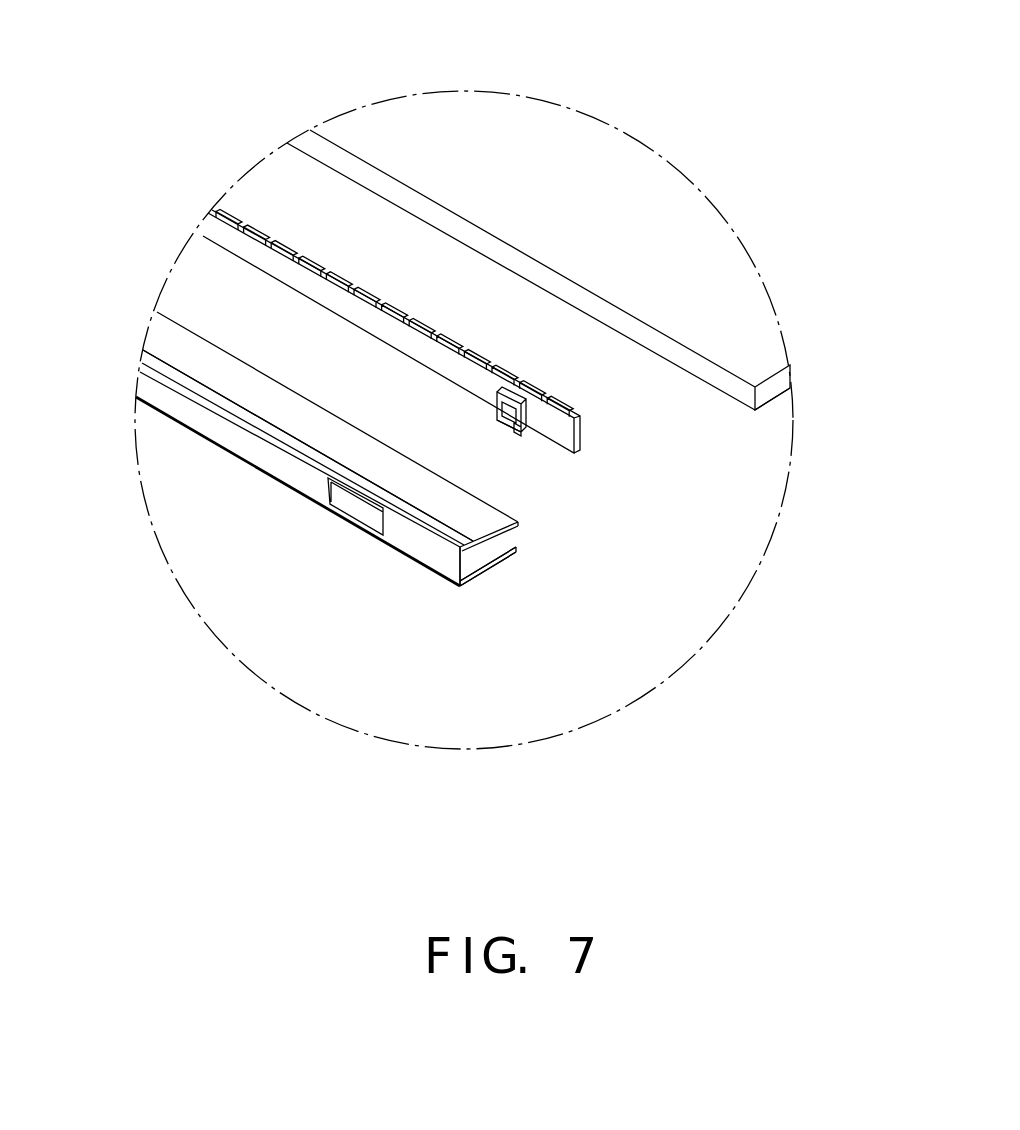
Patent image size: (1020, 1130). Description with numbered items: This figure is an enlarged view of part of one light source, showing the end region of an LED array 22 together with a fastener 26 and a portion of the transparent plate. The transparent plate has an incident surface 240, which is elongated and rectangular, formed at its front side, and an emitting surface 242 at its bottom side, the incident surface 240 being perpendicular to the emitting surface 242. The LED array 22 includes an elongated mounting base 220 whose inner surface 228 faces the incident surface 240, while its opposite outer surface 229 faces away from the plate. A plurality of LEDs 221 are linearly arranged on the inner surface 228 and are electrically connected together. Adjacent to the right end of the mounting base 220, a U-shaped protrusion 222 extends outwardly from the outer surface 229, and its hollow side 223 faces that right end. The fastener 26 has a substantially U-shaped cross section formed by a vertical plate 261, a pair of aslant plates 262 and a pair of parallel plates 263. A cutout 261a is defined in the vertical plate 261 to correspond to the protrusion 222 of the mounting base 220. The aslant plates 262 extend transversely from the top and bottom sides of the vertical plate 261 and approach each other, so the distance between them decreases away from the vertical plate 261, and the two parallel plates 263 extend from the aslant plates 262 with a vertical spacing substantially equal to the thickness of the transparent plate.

The LED array 22 is at (603, 428).
The fastener 26 is at (276, 498).
The mounting base 220 is at (222, 236).
The LEDs 221 is at (282, 250).
The protrusion 222 is at (496, 422).
The hollow side 223 is at (513, 422).
The inner surface 228 is at (577, 418).
The outer surface 229 is at (270, 265).
The incident surface 240 is at (480, 238).
The emitting surface 242 is at (781, 420).
The vertical plate 261 is at (422, 553).
The cutout 261a is at (357, 510).
The aslant plates 262 is at (470, 586).
The parallel plates 263 is at (502, 562).